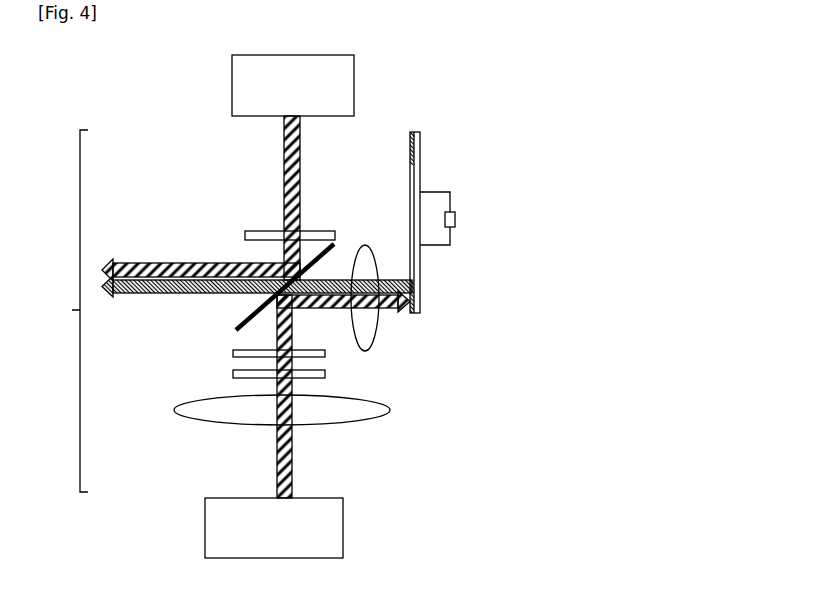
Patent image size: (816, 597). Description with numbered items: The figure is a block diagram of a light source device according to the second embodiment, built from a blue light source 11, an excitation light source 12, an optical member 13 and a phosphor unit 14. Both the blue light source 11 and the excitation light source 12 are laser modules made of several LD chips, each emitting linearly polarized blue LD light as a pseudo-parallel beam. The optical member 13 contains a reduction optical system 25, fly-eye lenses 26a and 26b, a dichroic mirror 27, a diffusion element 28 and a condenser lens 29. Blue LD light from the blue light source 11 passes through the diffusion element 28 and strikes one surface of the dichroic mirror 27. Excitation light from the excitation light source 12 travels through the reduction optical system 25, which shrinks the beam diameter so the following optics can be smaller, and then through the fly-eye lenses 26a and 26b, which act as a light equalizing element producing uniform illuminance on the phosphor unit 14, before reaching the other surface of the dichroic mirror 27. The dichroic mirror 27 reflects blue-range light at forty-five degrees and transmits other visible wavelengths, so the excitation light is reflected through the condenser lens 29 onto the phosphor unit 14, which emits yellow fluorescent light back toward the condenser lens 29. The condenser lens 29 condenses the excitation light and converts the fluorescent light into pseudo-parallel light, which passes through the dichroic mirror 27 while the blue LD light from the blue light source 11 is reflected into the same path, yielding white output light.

The blue light source 11 is at (354, 86).
The excitation light source 12 is at (343, 500).
The optical member 13 is at (68, 311).
The phosphor unit 14 is at (424, 192).
The reduction optical system 25 is at (390, 408).
The fly-eye lens 26a is at (233, 374).
The fly-eye lens 26b is at (325, 353).
The dichroic mirror 27 is at (236, 330).
The diffusion element 28 is at (320, 231).
The condenser lens 29 is at (365, 245).